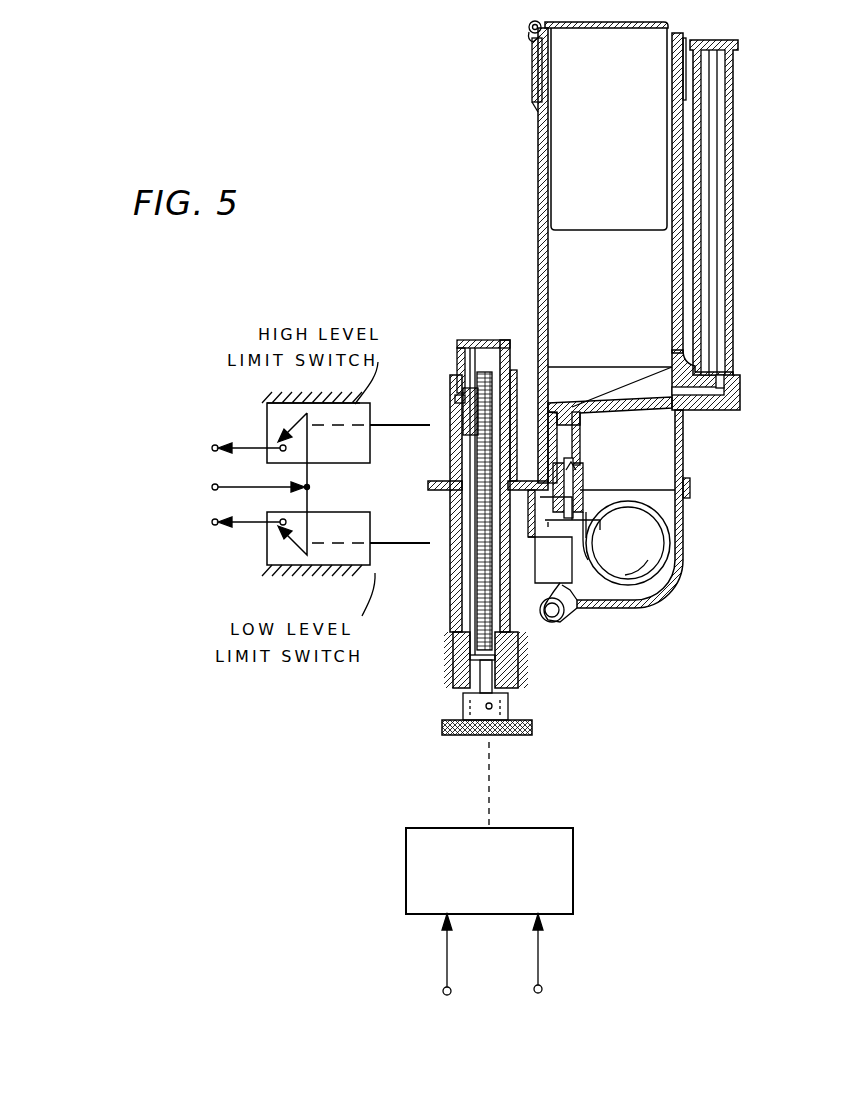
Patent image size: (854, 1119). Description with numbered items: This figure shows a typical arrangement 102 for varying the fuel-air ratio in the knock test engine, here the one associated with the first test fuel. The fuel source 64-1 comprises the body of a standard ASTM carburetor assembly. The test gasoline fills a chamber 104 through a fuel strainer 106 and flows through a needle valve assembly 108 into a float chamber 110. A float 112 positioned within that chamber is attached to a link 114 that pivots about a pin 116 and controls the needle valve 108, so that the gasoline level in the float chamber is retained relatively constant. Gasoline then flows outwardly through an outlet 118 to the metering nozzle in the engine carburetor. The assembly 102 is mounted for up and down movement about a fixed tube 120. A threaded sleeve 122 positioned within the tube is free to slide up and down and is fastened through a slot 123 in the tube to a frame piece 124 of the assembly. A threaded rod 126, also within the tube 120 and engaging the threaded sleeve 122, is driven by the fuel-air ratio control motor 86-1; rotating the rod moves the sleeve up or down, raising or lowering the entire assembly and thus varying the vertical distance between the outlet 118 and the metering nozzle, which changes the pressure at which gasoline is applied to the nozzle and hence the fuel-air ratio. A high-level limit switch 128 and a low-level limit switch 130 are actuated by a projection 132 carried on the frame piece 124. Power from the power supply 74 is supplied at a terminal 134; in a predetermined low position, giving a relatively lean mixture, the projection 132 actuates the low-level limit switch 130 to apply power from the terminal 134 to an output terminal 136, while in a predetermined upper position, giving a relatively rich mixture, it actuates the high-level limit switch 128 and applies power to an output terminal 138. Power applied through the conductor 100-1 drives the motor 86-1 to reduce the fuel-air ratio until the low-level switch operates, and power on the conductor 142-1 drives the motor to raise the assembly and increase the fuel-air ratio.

The fuel source 64-1 is at (680, 42).
The arrangement for varying the fuel-air ratio 102 is at (455, 195).
The chamber 104 is at (630, 318).
The fuel strainer 106 is at (617, 229).
The needle valve assembly 108 is at (575, 478).
The float chamber 110 is at (667, 511).
The float 112 is at (654, 584).
The link 114 is at (583, 560).
The pin 116 is at (556, 525).
The outlet 118 is at (561, 622).
The fixed tube 120 is at (508, 346).
The threaded sleeve 122 is at (463, 432).
The slot 123 is at (465, 555).
The frame piece 124 is at (452, 380).
The threaded rod 126 is at (480, 590).
The high-level limit switch 128 is at (267, 420).
The low-level limit switch 130 is at (267, 556).
The projection 132 is at (446, 490).
The terminal 134 is at (212, 485).
The output terminal 136 is at (214, 526).
The output terminal 138 is at (212, 444).
The power supply 74 is at (212, 489).
The fuel-air ratio control motor 86-1 is at (575, 875).
The conductor 100-1 is at (442, 958).
The conductor 142-1 is at (540, 962).